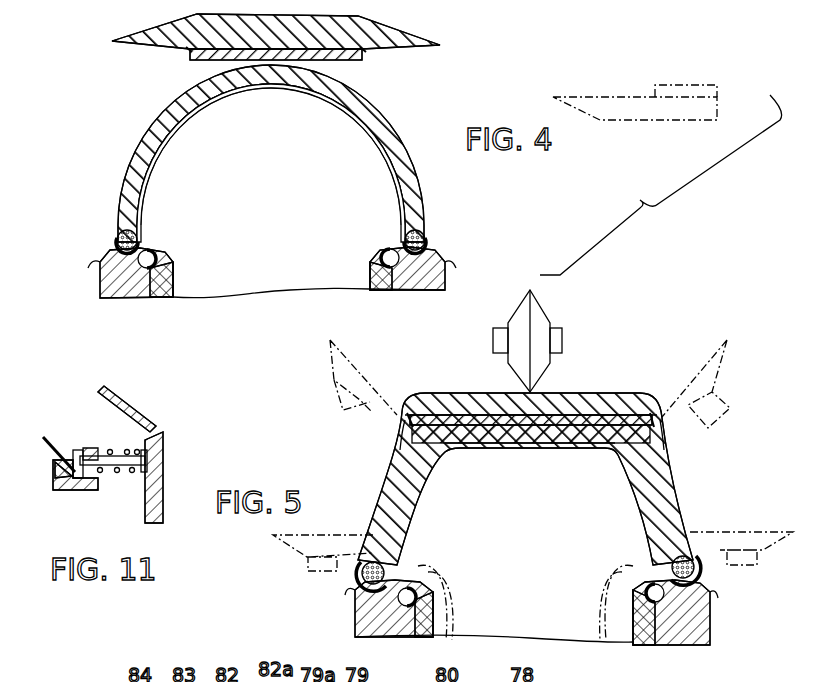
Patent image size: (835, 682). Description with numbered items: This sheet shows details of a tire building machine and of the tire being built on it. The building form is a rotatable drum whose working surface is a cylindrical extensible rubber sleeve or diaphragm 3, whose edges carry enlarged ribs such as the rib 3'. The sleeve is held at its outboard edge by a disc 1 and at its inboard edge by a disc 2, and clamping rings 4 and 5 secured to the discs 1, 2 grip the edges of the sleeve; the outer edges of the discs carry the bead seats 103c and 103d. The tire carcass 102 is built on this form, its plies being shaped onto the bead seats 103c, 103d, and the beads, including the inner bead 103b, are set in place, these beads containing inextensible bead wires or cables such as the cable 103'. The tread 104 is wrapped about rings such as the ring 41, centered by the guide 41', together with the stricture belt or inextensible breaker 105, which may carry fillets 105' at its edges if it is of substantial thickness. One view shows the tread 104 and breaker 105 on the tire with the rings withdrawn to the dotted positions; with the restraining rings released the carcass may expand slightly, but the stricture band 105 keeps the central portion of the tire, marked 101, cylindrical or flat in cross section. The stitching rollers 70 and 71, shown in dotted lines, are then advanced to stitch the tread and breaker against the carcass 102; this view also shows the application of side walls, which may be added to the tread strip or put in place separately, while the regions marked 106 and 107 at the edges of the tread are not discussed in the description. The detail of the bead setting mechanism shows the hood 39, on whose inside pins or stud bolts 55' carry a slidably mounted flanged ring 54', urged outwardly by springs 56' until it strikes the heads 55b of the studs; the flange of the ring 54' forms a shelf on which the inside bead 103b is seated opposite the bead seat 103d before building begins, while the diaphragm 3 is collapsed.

In FIG. 4, the disc 1 is at (136, 300).
In FIG. 5, the disc 1 is at (387, 638).
In FIG. 4, the disc 2 is at (446, 275).
In FIG. 5, the disc 2 is at (684, 645).
In FIG. 4, the diaphragm 3 is at (271, 163).
In FIG. 5, the diaphragm 3 is at (525, 541).
In FIG. 4, the rib 3' is at (172, 257).
In FIG. 5, the rib 3' is at (437, 586).
In FIG. 4, the clamping ring 4 is at (174, 277).
In FIG. 5, the clamping ring 4 is at (420, 638).
In FIG. 4, the clamping ring 5 is at (369, 274).
In FIG. 5, the clamping ring 5 is at (628, 645).
In FIG. 11, the hood 39 is at (155, 497).
In FIG. 4, the ring 41 is at (657, 112).
In FIG. 4, the guide 41' is at (706, 78).
In FIG. 11, the flanged ring 54' is at (91, 490).
In FIG. 11, the stud bolt 55' is at (133, 432).
In FIG. 11, the head 55b is at (78, 450).
In FIG. 11, the spring 56' is at (127, 407).
In FIG. 5, the stitching roller 70 is at (508, 322).
In FIG. 5, the stitching roller 71 is at (540, 318).
In FIG. 4, the tire 101 is at (292, 185).
In FIG. 5, the tire 101 is at (542, 567).
In FIG. 4, the tire carcass 102 is at (135, 155).
In FIG. 5, the tire carcass 102 is at (505, 432).
In FIG. 4, the bead wire 103' is at (95, 240).
In FIG. 5, the bead wire 103' is at (344, 586).
In FIG. 5, the inner bead 103b is at (694, 570).
In FIG. 11, the inner bead 103b is at (45, 440).
In FIG. 4, the bead seat 103c is at (96, 266).
In FIG. 5, the bead seat 103c is at (363, 605).
In FIG. 4, the bead seat 103d is at (446, 250).
In FIG. 5, the bead seat 103d is at (678, 582).
In FIG. 4, the tread 104 is at (384, 36).
In FIG. 5, the tread 104 is at (567, 393).
In FIG. 4, the breaker 105 is at (306, 68).
In FIG. 5, the breaker 105 is at (548, 384).
In FIG. 4, the fillet 105' is at (282, 63).
In FIG. 5, the fillet 105' is at (524, 433).
In FIG. 5, the shoulder 106 is at (398, 468).
In FIG. 5, the shoulder 107 is at (668, 467).